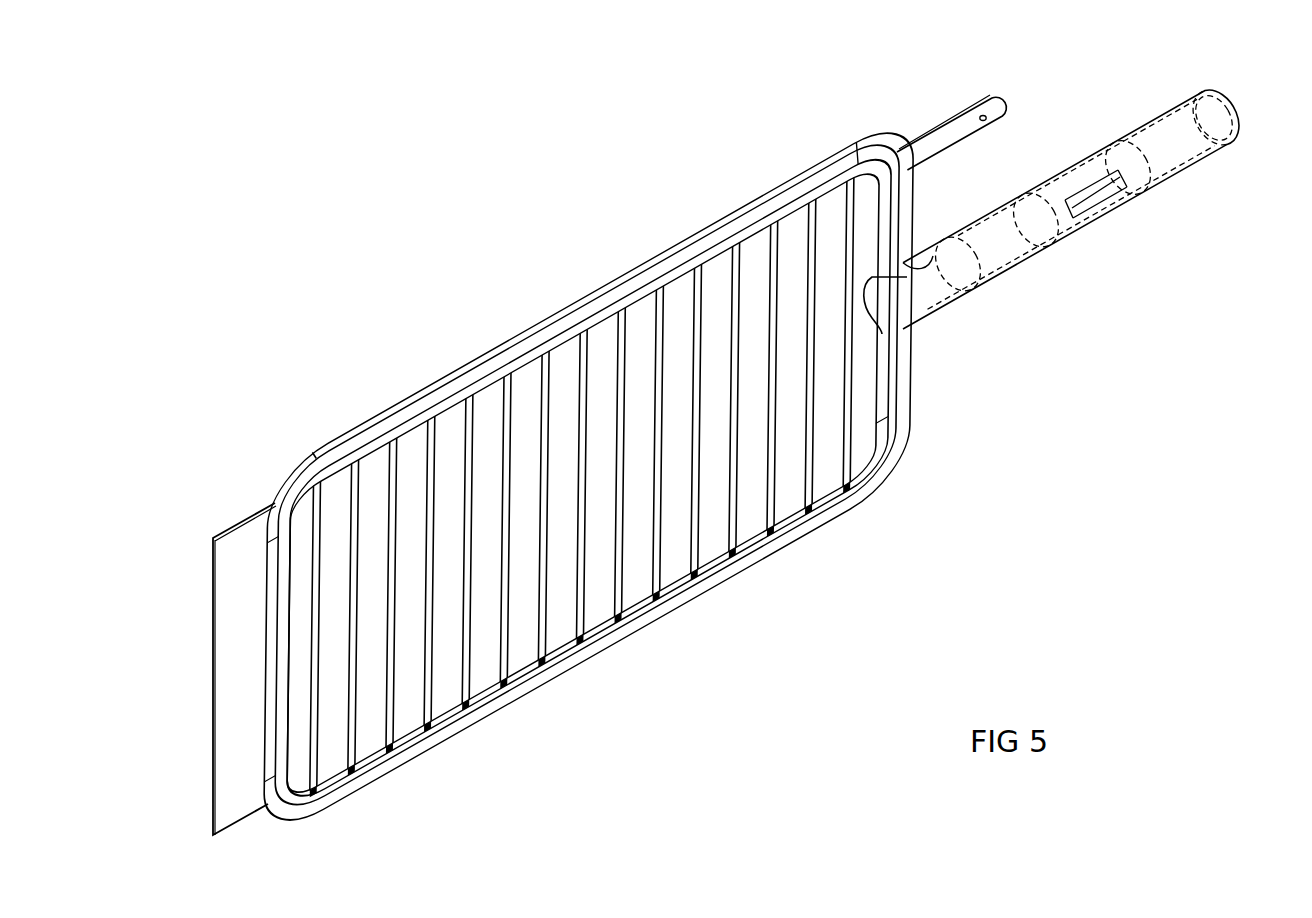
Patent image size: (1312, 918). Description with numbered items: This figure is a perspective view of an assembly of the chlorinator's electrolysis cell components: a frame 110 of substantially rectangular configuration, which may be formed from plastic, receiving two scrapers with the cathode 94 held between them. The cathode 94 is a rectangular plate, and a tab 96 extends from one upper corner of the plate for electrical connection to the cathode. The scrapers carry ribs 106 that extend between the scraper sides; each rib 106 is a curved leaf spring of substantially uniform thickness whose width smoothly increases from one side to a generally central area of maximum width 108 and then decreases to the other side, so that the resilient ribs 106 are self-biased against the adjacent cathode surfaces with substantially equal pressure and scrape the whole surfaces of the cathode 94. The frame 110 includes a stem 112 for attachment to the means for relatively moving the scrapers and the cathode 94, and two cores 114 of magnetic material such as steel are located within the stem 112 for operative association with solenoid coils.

The cathode 94 is at (230, 585).
The tab 96 is at (947, 135).
The ribs 106 is at (395, 700).
The central area of maximum width 108 is at (660, 433).
The frame 110 is at (450, 392).
The stem 112 is at (1073, 173).
The cores 114 is at (1193, 147).